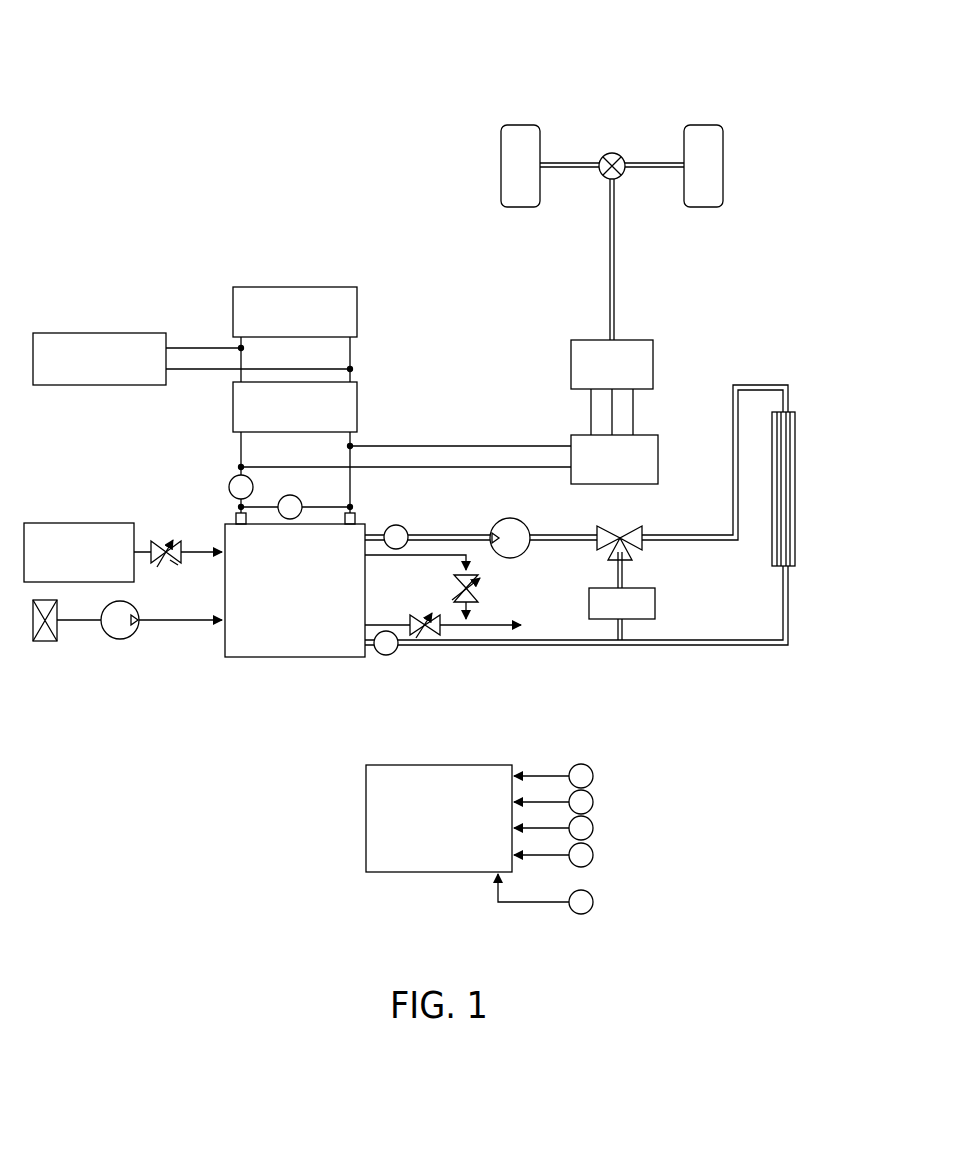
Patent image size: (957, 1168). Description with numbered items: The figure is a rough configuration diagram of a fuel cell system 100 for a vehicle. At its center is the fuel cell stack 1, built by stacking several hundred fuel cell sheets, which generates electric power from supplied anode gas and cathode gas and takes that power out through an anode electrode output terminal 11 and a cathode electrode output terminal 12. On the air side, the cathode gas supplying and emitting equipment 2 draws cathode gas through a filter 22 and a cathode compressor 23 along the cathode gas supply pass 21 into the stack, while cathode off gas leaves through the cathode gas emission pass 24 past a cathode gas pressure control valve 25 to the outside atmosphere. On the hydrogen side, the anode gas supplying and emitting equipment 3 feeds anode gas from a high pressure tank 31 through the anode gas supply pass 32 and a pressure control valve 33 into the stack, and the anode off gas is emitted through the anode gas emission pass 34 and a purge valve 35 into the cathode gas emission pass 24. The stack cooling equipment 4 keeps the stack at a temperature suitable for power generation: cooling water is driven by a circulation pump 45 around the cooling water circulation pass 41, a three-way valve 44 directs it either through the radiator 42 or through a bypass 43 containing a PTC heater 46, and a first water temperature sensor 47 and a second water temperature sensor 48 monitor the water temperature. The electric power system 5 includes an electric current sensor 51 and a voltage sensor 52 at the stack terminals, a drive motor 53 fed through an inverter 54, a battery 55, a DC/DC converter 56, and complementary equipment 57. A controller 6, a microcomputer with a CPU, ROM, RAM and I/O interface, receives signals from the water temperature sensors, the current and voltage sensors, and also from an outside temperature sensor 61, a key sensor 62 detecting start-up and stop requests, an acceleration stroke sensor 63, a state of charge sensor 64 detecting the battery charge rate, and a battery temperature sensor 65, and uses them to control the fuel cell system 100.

The fuel cell system 100 is at (167, 82).
The fuel cell stack 1 is at (237, 657).
The anode electrode output terminal 11 is at (236, 515).
The cathode electrode output terminal 12 is at (355, 516).
The cathode gas supplying and emitting equipment 2 is at (177, 640).
The cathode gas supply pass 21 is at (155, 622).
The filter 22 is at (43, 641).
The cathode compressor 23 is at (134, 602).
The cathode gas emission pass 24 is at (503, 622).
The cathode gas pressure control valve 25 is at (421, 615).
The anode gas supplying and emitting equipment 3 is at (154, 525).
The high pressure tank 31 is at (84, 523).
The anode gas supply pass 32 is at (143, 548).
The pressure control valve 33 is at (175, 562).
The anode gas emission pass 34 is at (380, 556).
The purge valve 35 is at (476, 579).
The stack cooling equipment 4 is at (657, 655).
The cooling water circulation pass 41 is at (716, 541).
The radiator 42 is at (772, 553).
The bypass 43 is at (625, 571).
The three-way valve 44 is at (629, 530).
The circulation pump 45 is at (510, 517).
The PTC heater 46 is at (589, 611).
The first water temperature sensor 47 is at (385, 655).
The second water temperature sensor 48 is at (406, 530).
The electric power system 5 is at (243, 281).
The electric current sensor 51 is at (232, 478).
The voltage sensor 52 is at (290, 495).
The drive motor 53 is at (653, 362).
The inverter 54 is at (658, 459).
The battery 55 is at (357, 310).
The DC/DC converter 56 is at (357, 405).
The complementary equipment 57 is at (100, 333).
The controller 6 is at (417, 872).
The outside temperature sensor 61 is at (593, 774).
The key sensor 62 is at (593, 800).
The acceleration stroke sensor 63 is at (593, 826).
The state of charge sensor 64 is at (593, 853).
The battery temperature sensor 65 is at (593, 900).